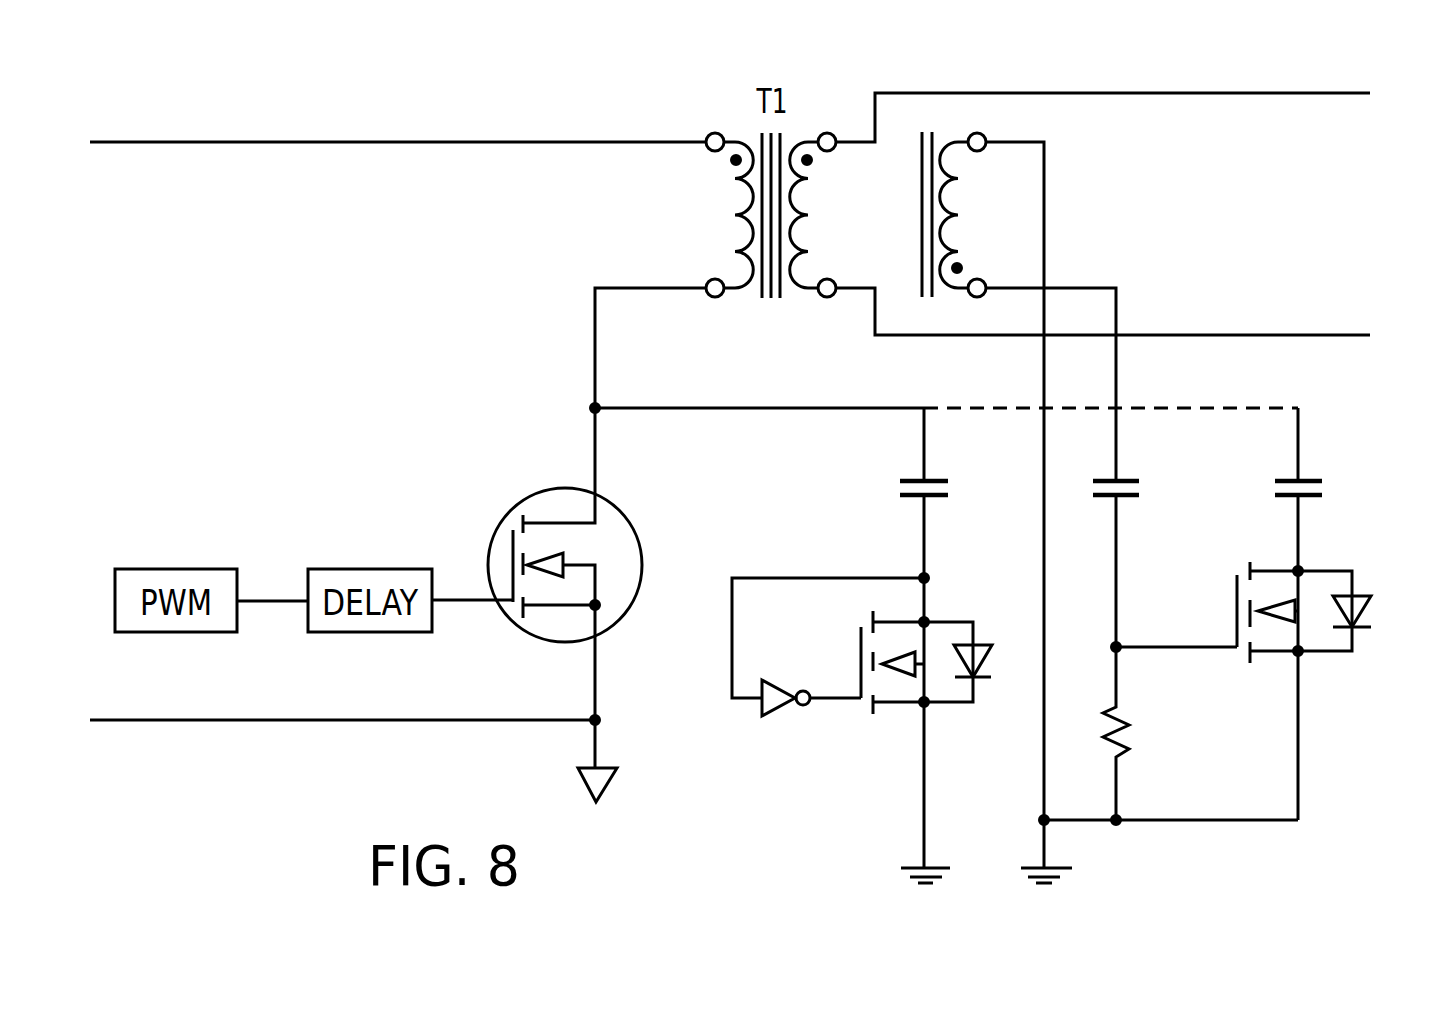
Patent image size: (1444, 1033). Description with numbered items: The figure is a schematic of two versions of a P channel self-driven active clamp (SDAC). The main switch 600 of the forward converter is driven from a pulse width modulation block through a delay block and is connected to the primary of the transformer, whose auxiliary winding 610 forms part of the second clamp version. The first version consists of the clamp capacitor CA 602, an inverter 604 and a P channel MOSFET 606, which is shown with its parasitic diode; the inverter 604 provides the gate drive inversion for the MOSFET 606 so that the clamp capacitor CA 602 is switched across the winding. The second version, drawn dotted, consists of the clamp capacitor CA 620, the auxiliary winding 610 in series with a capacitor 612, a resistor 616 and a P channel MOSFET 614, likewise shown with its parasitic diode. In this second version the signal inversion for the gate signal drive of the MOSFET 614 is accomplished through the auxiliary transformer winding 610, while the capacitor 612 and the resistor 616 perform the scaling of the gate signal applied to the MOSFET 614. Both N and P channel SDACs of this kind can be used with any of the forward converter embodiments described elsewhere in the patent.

The main switch transistor Q1 600 is at (523, 497).
The CA 602 is at (903, 472).
The inverter 604 is at (766, 716).
The P channel MOSFET 606 is at (905, 714).
The auxiliary winding 610 is at (952, 132).
The capacitor 612 is at (1132, 470).
The P channel MOSFET 614 is at (1320, 665).
The resistor 616 is at (1128, 715).
The CA 620 is at (1315, 470).